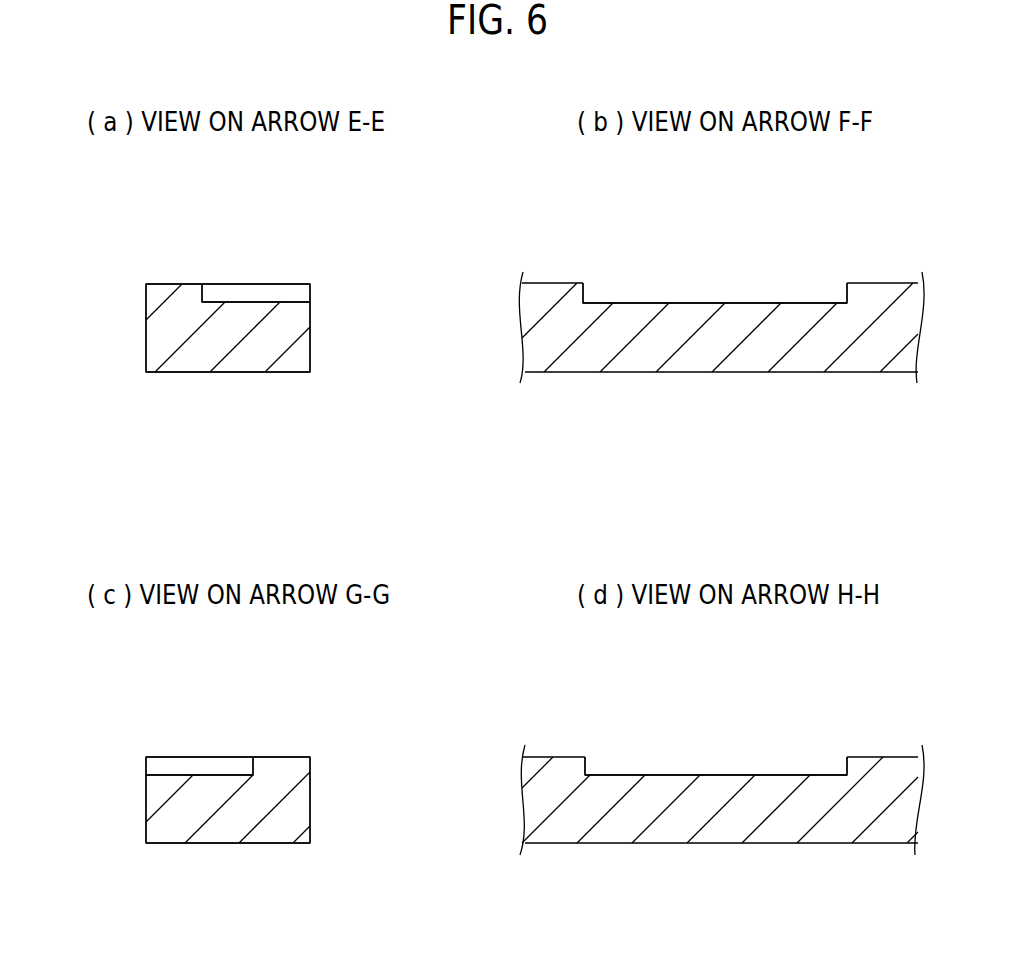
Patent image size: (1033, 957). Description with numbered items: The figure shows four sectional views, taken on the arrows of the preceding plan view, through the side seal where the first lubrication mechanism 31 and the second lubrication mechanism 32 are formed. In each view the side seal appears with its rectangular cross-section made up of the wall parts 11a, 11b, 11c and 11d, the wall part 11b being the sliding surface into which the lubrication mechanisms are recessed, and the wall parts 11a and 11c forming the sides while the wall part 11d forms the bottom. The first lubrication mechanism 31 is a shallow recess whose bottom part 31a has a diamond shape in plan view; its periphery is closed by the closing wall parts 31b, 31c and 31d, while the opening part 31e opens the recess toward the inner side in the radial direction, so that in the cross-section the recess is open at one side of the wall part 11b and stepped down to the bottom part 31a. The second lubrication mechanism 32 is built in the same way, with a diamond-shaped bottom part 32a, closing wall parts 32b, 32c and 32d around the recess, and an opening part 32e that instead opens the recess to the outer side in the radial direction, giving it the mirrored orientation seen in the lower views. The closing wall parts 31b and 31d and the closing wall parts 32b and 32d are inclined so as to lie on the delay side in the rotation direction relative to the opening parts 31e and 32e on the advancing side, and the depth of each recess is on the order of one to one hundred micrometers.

The wall part 11a is at (146, 323).
The wall part 11b is at (187, 284).
The wall part 11c is at (310, 327).
The wall part 11d is at (212, 372).
The first lubrication mechanism 31 is at (288, 262).
The bottom part 31a is at (230, 302).
The closing wall part 31b is at (585, 287).
The closing wall part 31c is at (210, 297).
The closing wall part 31d is at (843, 287).
The opening part 31e is at (310, 295).
The second lubrication mechanism 32 is at (167, 735).
The bottom part 32a is at (223, 775).
The closing wall part 32b is at (585, 758).
The closing wall part 32c is at (253, 774).
The closing wall part 32d is at (837, 757).
The opening part 32e is at (146, 765).